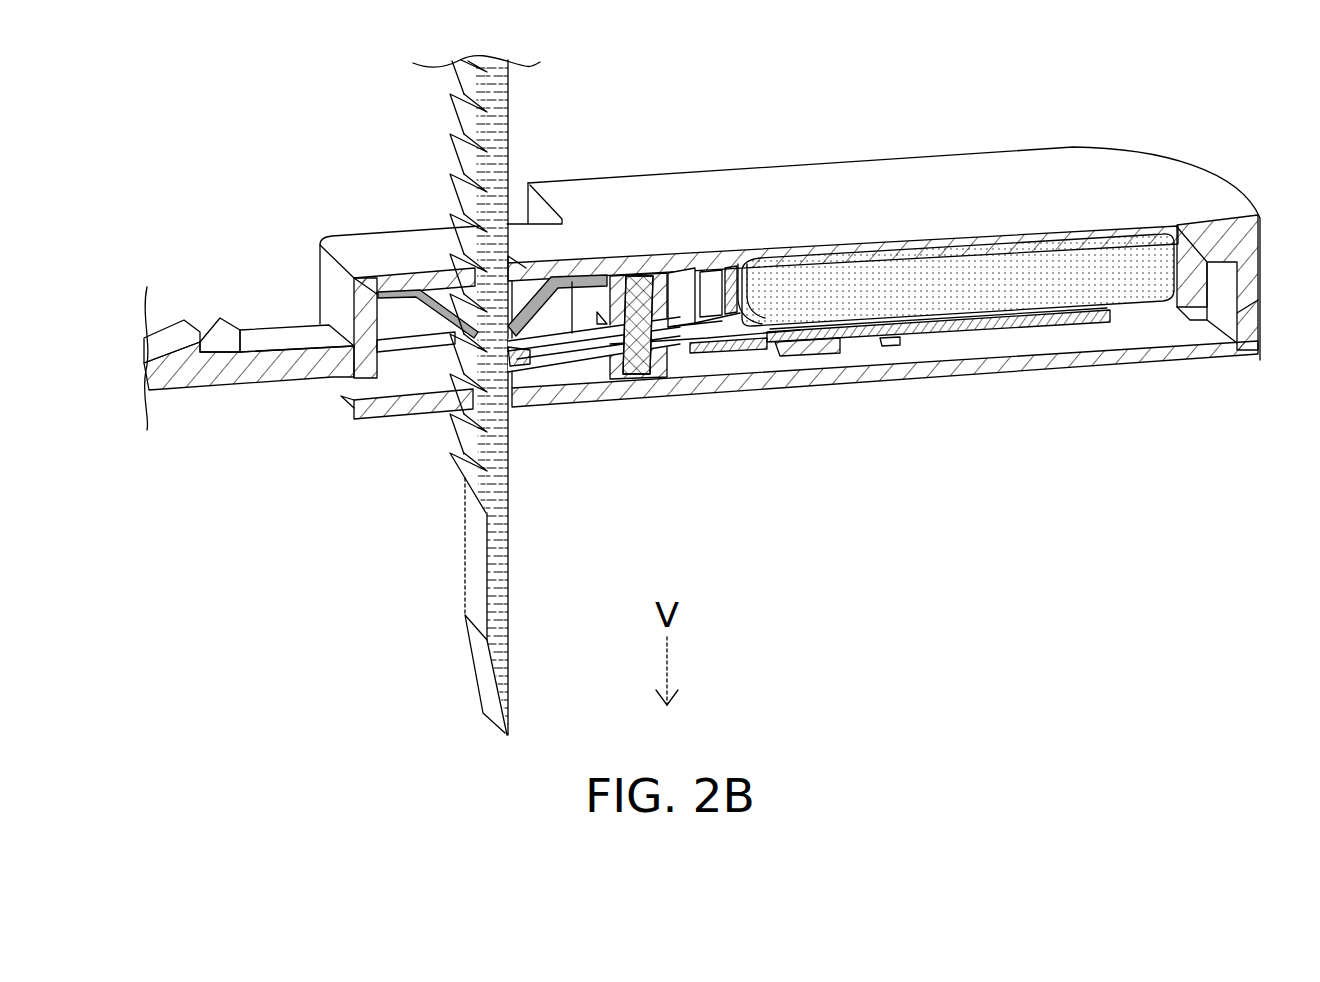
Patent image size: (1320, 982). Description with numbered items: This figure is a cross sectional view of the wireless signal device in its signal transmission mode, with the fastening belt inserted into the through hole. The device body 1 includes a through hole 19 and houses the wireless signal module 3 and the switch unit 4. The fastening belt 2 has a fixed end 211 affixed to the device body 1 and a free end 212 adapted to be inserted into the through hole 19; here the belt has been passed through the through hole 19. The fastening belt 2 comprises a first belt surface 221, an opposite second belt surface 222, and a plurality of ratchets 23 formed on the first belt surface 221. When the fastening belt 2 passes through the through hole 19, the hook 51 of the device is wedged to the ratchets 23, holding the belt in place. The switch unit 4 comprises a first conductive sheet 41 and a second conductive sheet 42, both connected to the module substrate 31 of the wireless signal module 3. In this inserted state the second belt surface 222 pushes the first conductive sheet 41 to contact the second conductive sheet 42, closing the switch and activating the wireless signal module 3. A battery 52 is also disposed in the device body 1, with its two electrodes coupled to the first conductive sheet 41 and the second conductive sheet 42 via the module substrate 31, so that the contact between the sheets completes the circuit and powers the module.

The device body 1 is at (906, 152).
The through hole 19 is at (528, 262).
The fastening belt 2 is at (250, 386).
The fixed end 211 is at (332, 378).
The free end 212 is at (483, 675).
The first belt surface 221 is at (465, 555).
The second belt surface 222 is at (508, 587).
The ratchets 23 is at (462, 478).
The wireless signal module 3 is at (965, 330).
The module substrate 31 is at (880, 325).
The switch unit 4 is at (542, 374).
The first conductive sheet 41 is at (566, 333).
The second conductive sheet 42 is at (698, 347).
The hook 51 is at (410, 283).
The battery 52 is at (1020, 280).